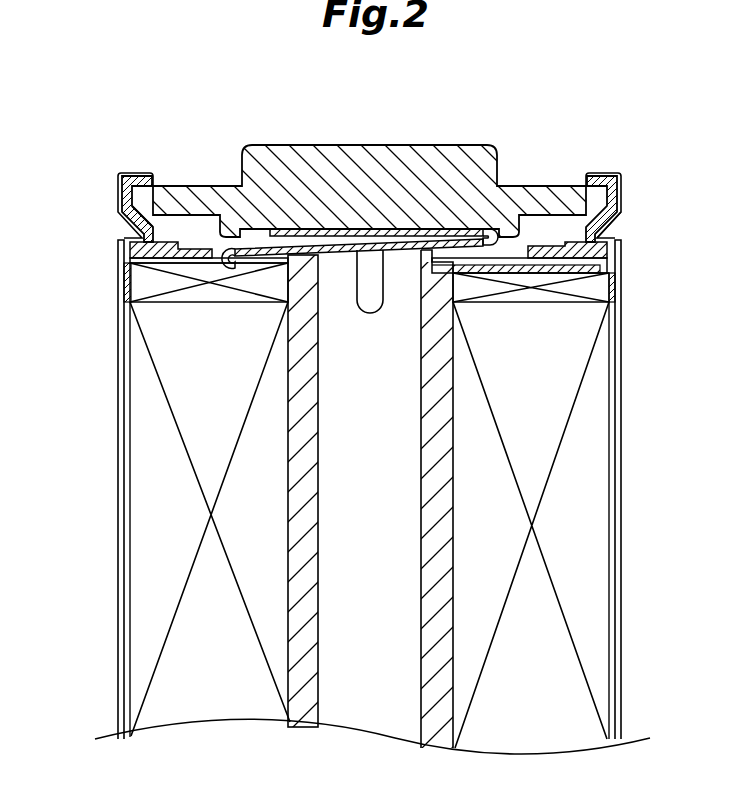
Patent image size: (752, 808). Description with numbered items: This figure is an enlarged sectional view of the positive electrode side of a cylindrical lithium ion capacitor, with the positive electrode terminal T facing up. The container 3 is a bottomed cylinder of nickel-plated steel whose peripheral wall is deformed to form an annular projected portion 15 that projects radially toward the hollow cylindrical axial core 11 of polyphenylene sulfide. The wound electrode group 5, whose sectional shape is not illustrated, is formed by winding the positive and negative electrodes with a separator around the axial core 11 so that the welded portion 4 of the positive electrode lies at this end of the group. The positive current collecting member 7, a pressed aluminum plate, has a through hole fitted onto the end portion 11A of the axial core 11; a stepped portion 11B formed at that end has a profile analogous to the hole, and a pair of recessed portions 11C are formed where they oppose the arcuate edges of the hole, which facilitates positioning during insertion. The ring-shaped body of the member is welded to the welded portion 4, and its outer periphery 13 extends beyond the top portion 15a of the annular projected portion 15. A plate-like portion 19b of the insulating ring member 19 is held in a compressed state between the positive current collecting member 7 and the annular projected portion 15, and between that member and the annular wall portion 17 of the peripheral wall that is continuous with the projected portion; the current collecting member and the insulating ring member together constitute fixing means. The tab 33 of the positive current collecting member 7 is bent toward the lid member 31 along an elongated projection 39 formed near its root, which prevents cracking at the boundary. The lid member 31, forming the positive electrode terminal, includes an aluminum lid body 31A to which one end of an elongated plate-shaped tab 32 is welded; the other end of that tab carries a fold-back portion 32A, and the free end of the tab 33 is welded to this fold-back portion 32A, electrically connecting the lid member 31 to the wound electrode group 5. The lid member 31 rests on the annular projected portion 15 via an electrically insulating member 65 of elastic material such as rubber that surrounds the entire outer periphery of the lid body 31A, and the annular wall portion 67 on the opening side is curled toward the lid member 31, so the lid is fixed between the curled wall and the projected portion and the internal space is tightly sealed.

The container 3 is at (112, 430).
The welded portion of the positive electrode 4 is at (200, 300).
The wound electrode group 5 is at (154, 490).
The positive current collecting member 7 is at (598, 281).
The axial core 11 is at (320, 546).
The end portion of the axial core 11A is at (421, 266).
The stepped portion 11B is at (488, 268).
The recessed portion 11C is at (366, 312).
The outer periphery of the positive current collecting member 13 is at (615, 243).
The annular projected portion 15 is at (120, 208).
The top portion of the annular projected portion 15a is at (126, 233).
The annular wall portion 17 is at (128, 276).
The insulating ring member 19 is at (612, 246).
The plate-like portion of the insulating ring member 19b is at (613, 294).
The lid member 31 is at (386, 195).
The lid body 31A is at (222, 248).
The tab 32 is at (308, 229).
The fold-back portion 32A is at (490, 237).
The tab 33 is at (267, 248).
The elongated projection 39 is at (127, 291).
The electrically insulating member 65 is at (586, 173).
The annular wall portion 67 is at (619, 195).
The positive electrode terminal T is at (352, 170).